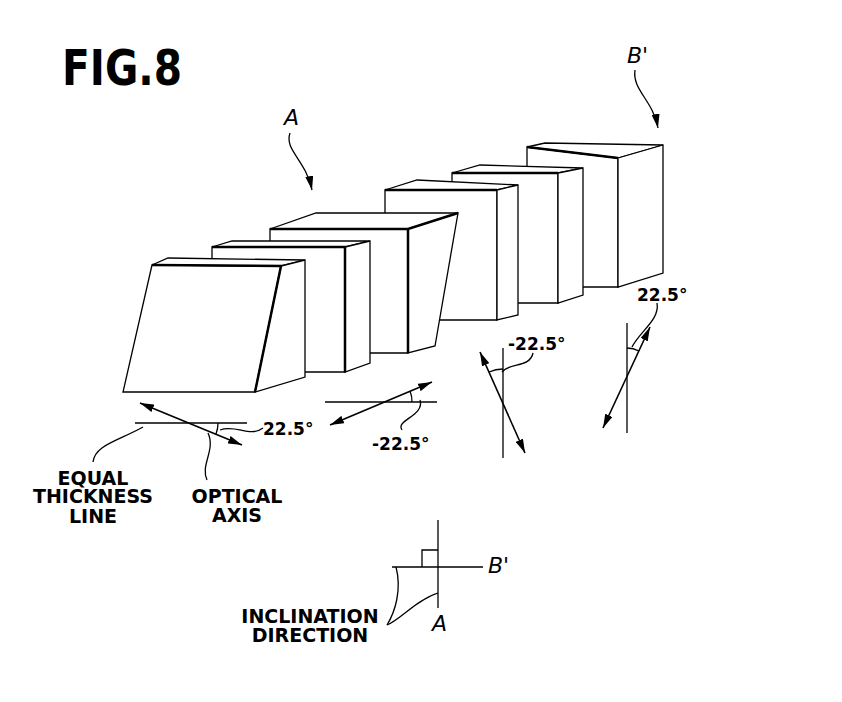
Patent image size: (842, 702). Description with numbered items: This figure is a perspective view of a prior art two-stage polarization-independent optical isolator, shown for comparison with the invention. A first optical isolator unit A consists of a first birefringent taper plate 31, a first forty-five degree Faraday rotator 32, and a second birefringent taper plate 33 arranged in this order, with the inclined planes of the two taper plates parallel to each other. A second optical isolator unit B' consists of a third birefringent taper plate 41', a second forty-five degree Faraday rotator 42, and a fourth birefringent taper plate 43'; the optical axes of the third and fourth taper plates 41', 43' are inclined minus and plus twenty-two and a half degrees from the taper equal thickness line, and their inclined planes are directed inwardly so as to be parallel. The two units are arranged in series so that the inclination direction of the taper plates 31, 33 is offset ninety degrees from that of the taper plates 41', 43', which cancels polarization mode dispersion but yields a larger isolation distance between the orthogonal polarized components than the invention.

The first birefringent taper plate 31 is at (150, 308).
The first 45° Faraday rotator 32 is at (242, 241).
The second birefringent taper plate 33 is at (315, 221).
The third birefringent taper plate 41' is at (451, 221).
The second 45° Faraday rotator 42 is at (483, 168).
The fourth birefringent taper plate 43' is at (595, 187).